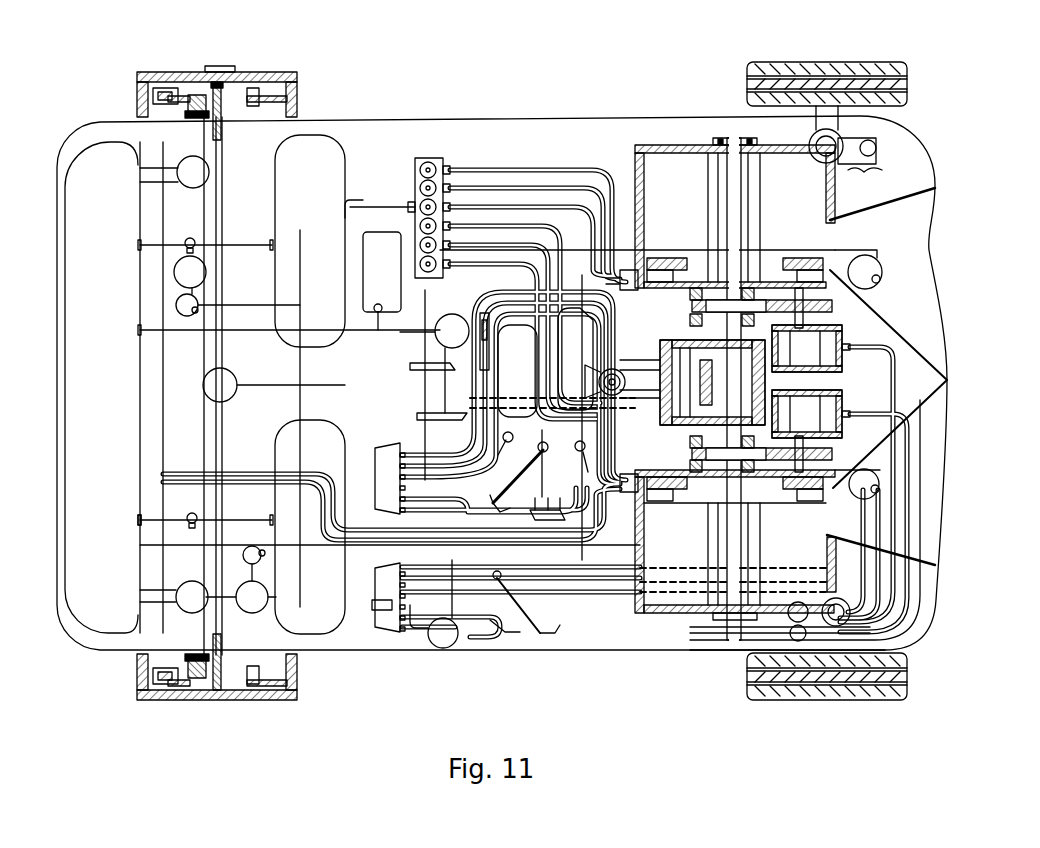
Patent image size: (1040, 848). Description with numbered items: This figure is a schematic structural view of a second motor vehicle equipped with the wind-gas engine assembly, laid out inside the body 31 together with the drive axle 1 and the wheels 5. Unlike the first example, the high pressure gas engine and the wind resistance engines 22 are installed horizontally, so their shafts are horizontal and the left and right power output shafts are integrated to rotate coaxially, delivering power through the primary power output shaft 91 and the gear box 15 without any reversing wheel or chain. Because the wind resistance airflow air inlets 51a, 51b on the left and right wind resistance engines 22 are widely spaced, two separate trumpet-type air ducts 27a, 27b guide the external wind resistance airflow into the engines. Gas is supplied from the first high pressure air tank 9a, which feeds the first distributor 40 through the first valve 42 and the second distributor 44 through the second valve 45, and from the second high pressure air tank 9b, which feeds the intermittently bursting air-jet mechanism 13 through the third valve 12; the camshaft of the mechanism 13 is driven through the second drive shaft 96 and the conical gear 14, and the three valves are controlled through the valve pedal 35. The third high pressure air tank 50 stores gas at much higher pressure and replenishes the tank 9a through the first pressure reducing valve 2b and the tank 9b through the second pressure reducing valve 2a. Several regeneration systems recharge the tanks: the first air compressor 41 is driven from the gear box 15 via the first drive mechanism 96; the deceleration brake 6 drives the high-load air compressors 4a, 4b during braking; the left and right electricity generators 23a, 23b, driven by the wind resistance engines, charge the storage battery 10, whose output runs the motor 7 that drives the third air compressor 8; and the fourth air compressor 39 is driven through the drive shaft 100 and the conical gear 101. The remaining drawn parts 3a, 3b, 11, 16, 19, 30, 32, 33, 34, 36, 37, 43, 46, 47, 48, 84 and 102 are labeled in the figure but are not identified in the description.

The drive axle 1 is at (214, 383).
The second pressure reducing valve 2a is at (188, 241).
The front steering knuckle 3a is at (185, 300).
The high-load air compressor 4a is at (190, 170).
The wheel 5 is at (177, 90).
The deceleration brake 6 is at (207, 84).
The motor 7 is at (198, 260).
The third air compressor 8 is at (214, 238).
The first high pressure air tank 9a is at (253, 603).
The second high pressure air tank 9b is at (300, 230).
The storage battery 10 is at (318, 157).
The control box 11 is at (372, 262).
The third valve 12 is at (372, 188).
The intermittently bursting air-jet mechanism 13 is at (435, 158).
The conical gear 14 is at (445, 413).
The gear box 15 is at (522, 337).
The motor housing 16 is at (667, 200).
The rear hub cap 19 is at (163, 660).
The wind resistance engine 22 is at (660, 348).
The left electricity generator 23a is at (845, 274).
The right electricity generator 23b is at (870, 483).
The trumpet-type air duct 27a is at (930, 343).
The trumpet-type air duct 27b is at (935, 410).
The axle bearing 30 is at (808, 612).
The body 31 is at (742, 640).
The lower cylinder 32 is at (725, 628).
The upper cylinder 33 is at (650, 400).
The lever 34 is at (588, 567).
The valve pedal 35 is at (562, 612).
The bracket 36 is at (540, 620).
The pedal lever 37 is at (494, 583).
The fourth air compressor 39 is at (445, 648).
The first distributor 40 is at (398, 575).
The first air compressor 41 is at (382, 505).
The first valve 42 is at (455, 310).
The hose 43 is at (445, 365).
The second distributor 44 is at (430, 425).
The second valve 45 is at (386, 505).
The rear tank 46 is at (288, 603).
The rear axle shaft 47 is at (220, 652).
The rear bearing 48 is at (207, 658).
The third high pressure air tank 50 is at (158, 522).
The first pressure reducing valve 2b is at (192, 525).
The rear steering knuckle 3b is at (128, 608).
The high-load air compressor 4b is at (188, 600).
The air inlet 51a is at (847, 237).
The air inlet 51b is at (843, 523).
The stator 84 is at (703, 270).
The primary power output shaft 91 is at (700, 390).
The second drive shaft 96 is at (577, 395).
The drive shaft 100 is at (680, 410).
The conical gear 101 is at (452, 648).
The return line 102 is at (458, 628).